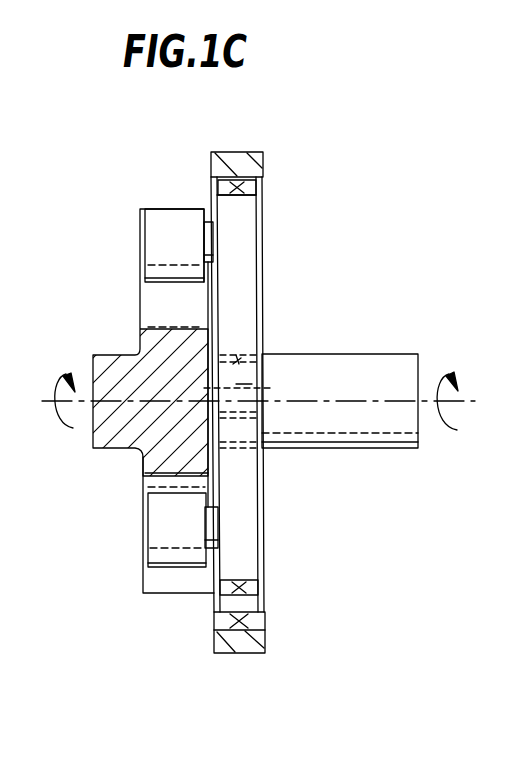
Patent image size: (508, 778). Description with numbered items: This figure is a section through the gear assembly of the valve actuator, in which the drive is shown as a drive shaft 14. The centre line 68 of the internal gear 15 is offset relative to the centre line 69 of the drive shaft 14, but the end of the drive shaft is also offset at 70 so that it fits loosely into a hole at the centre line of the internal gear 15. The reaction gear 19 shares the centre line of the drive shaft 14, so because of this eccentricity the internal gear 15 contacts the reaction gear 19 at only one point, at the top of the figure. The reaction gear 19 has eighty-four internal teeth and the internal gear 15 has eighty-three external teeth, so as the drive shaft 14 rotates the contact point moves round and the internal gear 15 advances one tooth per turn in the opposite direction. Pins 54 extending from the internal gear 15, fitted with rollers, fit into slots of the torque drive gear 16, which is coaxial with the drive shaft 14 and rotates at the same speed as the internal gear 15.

The drive shaft 14 is at (333, 428).
The internal gear 15 is at (242, 207).
The torque drive gear 16 is at (140, 308).
The reaction gear 19 is at (236, 164).
The pins 54 is at (157, 236).
The centre line of internal gear 68 is at (250, 384).
The centre line of drive shaft 69 is at (461, 394).
The offset end of drive shaft 70 is at (243, 358).